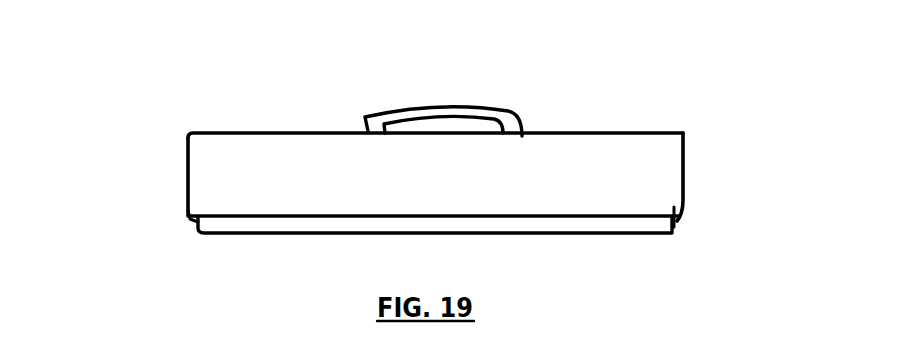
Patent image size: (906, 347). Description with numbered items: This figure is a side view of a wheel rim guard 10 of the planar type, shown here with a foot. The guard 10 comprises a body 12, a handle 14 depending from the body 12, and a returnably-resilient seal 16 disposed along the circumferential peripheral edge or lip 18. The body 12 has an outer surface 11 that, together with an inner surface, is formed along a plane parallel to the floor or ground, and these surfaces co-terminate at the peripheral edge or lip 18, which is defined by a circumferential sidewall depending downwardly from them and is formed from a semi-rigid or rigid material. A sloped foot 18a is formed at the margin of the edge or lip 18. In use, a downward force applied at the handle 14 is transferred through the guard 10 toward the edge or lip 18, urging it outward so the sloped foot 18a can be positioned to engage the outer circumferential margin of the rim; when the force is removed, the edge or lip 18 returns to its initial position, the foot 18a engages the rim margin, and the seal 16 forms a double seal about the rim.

The wheel rim guard 10 is at (147, 62).
The outer surface 11 is at (449, 177).
The body 12 is at (560, 115).
The handle 14 is at (445, 105).
The returnably-resilient seal 16 is at (650, 222).
The peripheral edge or lip 18 is at (672, 189).
The sloped foot 18a is at (176, 222).